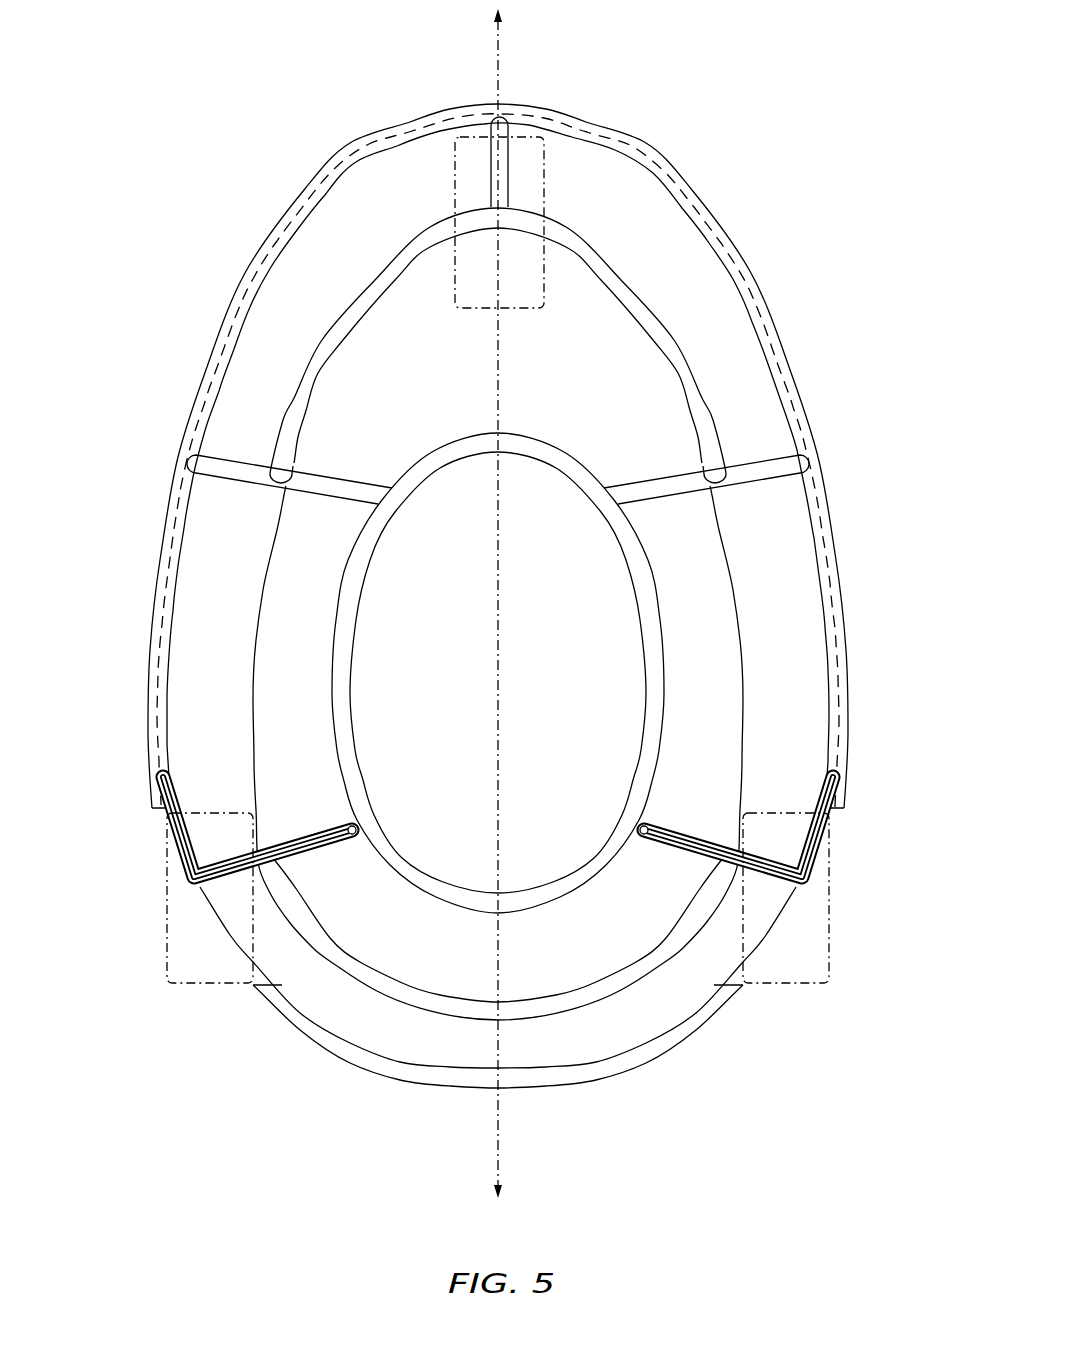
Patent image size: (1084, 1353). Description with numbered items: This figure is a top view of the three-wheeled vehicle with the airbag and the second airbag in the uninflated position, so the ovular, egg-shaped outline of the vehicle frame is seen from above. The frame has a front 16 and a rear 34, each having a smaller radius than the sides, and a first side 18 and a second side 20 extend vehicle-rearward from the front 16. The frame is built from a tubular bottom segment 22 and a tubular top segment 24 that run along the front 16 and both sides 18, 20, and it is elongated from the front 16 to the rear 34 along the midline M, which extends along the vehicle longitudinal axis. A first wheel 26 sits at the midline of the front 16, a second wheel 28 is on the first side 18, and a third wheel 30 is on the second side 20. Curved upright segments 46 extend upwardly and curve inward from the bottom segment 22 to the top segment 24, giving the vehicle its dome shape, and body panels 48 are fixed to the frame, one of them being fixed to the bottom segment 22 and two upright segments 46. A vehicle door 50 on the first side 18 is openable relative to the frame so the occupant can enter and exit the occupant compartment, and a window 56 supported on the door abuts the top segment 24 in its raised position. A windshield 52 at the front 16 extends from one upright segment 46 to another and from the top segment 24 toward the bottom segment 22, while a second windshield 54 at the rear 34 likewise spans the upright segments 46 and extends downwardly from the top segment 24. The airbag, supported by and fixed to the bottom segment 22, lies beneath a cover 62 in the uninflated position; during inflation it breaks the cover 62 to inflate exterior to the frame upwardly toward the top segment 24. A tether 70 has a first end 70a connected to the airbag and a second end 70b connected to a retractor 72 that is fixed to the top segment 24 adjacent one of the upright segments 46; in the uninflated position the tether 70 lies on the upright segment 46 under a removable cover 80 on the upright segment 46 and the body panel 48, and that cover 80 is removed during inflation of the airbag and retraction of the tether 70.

The front 16 is at (391, 115).
The first side 18 is at (147, 631).
The second side 20 is at (851, 631).
The bottom segment 22 is at (308, 190).
The top segment 24 is at (352, 585).
The first wheel 26 is at (548, 154).
The second wheel 28 is at (167, 887).
The third wheel 30 is at (829, 887).
The rear 34 is at (579, 1088).
The upright segments 46 is at (228, 455).
The body panels 48 is at (288, 301).
The vehicle door 50 is at (198, 719).
The windshield 52 is at (626, 386).
The second windshield 54 is at (398, 943).
The window 56 is at (294, 584).
The cover 62 is at (164, 490).
The tether 70 is at (308, 822).
The first end 70a is at (160, 790).
The second end 70b is at (347, 845).
The retractor 72 is at (362, 826).
The cover 80 is at (196, 846).
The central axis M is at (498, 1150).